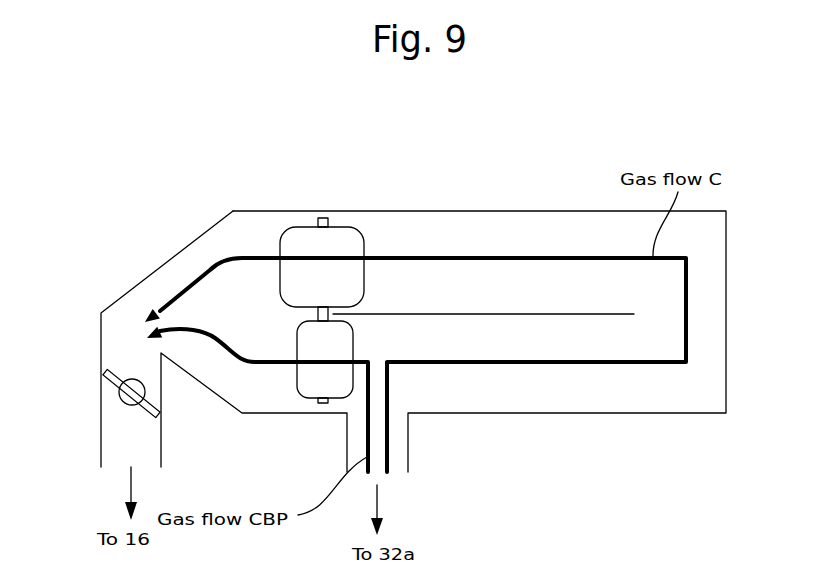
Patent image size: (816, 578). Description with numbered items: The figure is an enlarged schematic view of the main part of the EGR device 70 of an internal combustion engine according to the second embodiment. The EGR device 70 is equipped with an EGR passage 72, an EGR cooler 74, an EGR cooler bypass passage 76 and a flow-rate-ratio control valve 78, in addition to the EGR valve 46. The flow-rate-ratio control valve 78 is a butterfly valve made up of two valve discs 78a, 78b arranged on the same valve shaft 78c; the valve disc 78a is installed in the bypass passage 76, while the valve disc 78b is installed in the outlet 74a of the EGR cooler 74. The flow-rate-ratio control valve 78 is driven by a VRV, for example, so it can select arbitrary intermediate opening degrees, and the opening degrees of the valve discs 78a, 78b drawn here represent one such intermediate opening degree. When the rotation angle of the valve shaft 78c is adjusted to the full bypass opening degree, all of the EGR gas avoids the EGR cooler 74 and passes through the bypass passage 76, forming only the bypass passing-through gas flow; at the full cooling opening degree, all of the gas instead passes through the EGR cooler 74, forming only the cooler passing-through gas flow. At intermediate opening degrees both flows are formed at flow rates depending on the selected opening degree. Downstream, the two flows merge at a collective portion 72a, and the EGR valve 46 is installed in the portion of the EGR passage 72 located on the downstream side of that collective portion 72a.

The EGR valve 46 is at (113, 378).
The EGR device 70 is at (537, 180).
The EGR passage 72 is at (177, 240).
The collective portion 72a is at (138, 326).
The EGR cooler 74 is at (708, 298).
The outlet of the EGR cooler 74a is at (347, 222).
The EGR cooler bypass passage 76 is at (256, 391).
The flow-rate-ratio control valve 78 is at (356, 290).
The valve disc 78a is at (320, 385).
The valve disc 78b is at (298, 228).
The valve shaft 78c is at (322, 218).